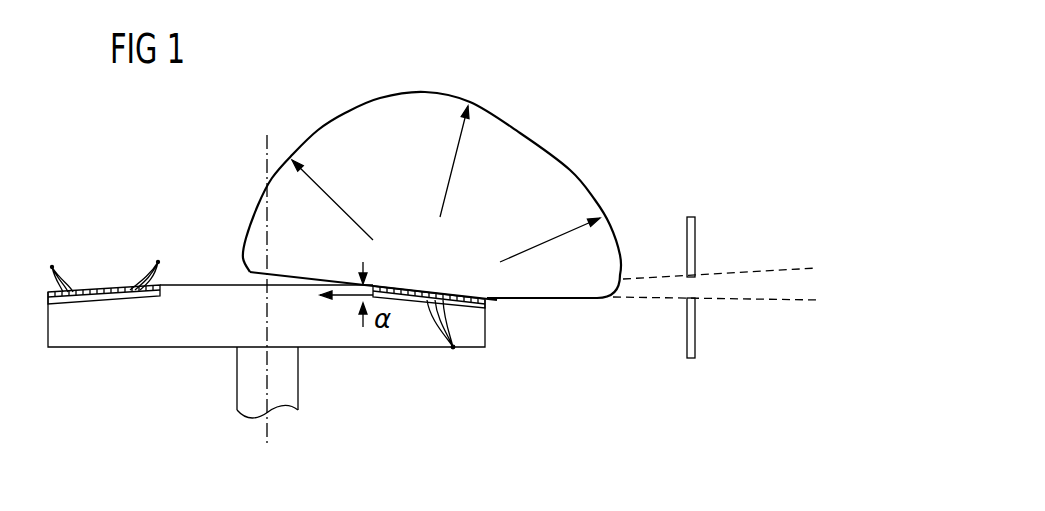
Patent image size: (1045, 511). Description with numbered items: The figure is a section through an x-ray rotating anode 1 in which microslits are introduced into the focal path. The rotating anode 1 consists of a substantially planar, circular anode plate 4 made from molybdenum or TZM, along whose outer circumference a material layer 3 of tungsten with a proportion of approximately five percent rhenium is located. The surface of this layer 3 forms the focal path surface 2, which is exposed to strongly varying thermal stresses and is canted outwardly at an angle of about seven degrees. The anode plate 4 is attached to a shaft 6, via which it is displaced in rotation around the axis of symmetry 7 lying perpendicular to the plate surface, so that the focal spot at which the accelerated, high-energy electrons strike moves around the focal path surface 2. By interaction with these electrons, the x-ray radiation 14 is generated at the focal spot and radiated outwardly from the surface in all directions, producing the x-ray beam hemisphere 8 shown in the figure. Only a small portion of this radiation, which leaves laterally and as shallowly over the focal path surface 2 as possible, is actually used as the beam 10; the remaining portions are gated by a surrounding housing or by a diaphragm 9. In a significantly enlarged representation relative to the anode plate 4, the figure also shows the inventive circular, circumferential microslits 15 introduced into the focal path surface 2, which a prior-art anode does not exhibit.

The rotating anode 1 is at (366, 358).
The focal path surface 2 is at (112, 288).
The material layer 3 is at (137, 302).
The anode plate 4 is at (198, 337).
The shaft 6 is at (290, 367).
The axis of symmetry 7 is at (265, 152).
The x-ray beam hemisphere 8 is at (357, 110).
The diaphragm 9 is at (687, 337).
The light beam 10 is at (755, 283).
The x-ray radiation 14 is at (337, 205).
The microslits 15 is at (258, 307).